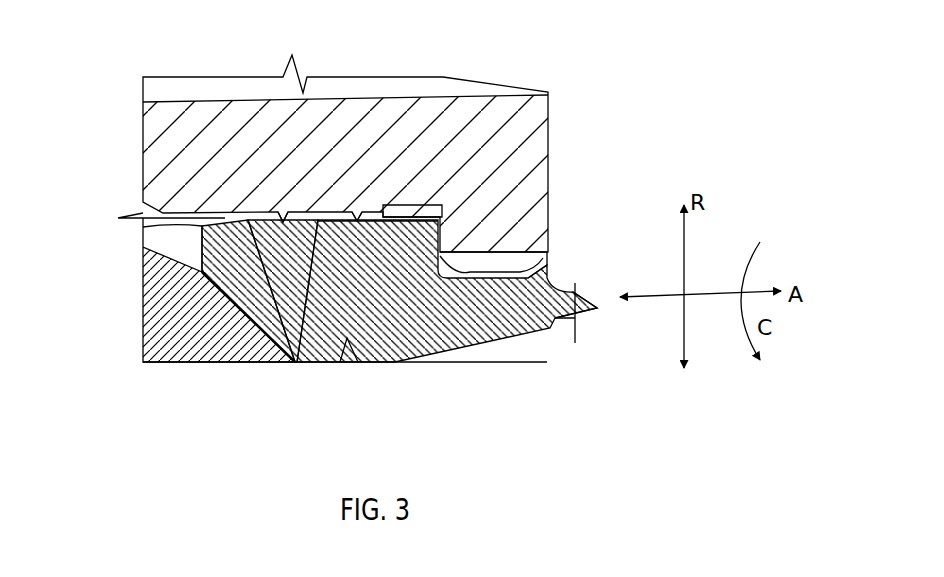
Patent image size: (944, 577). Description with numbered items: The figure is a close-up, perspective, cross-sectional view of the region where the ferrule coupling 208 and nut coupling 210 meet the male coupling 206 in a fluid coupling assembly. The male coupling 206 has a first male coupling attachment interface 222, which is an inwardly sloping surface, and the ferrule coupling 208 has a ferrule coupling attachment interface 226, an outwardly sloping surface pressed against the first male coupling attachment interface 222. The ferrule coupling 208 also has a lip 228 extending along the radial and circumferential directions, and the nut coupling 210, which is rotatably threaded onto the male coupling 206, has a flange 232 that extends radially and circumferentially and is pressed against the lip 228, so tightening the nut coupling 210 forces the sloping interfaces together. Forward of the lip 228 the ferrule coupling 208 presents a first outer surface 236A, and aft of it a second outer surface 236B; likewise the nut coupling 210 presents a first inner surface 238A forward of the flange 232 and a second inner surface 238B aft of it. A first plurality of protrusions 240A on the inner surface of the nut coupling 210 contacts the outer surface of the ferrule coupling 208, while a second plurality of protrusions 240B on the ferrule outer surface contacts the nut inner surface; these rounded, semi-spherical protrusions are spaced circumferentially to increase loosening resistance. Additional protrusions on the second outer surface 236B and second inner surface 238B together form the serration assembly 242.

The male coupling 206 is at (157, 327).
The ferrule coupling 208 is at (500, 325).
The nut coupling 210 is at (253, 137).
The first male coupling attachment interface 222 is at (243, 303).
The ferrule coupling attachment interface 226 is at (257, 342).
The lip 228 is at (483, 267).
The flange 232 is at (427, 237).
The first outer surface 236A is at (418, 203).
The second outer surface 236B is at (573, 333).
The first inner surface 238A is at (343, 222).
The second inner surface 238B is at (550, 246).
The first plurality of protrusions 240A is at (357, 217).
The second plurality of protrusions 240B is at (296, 362).
The serration assembly 242 is at (560, 242).